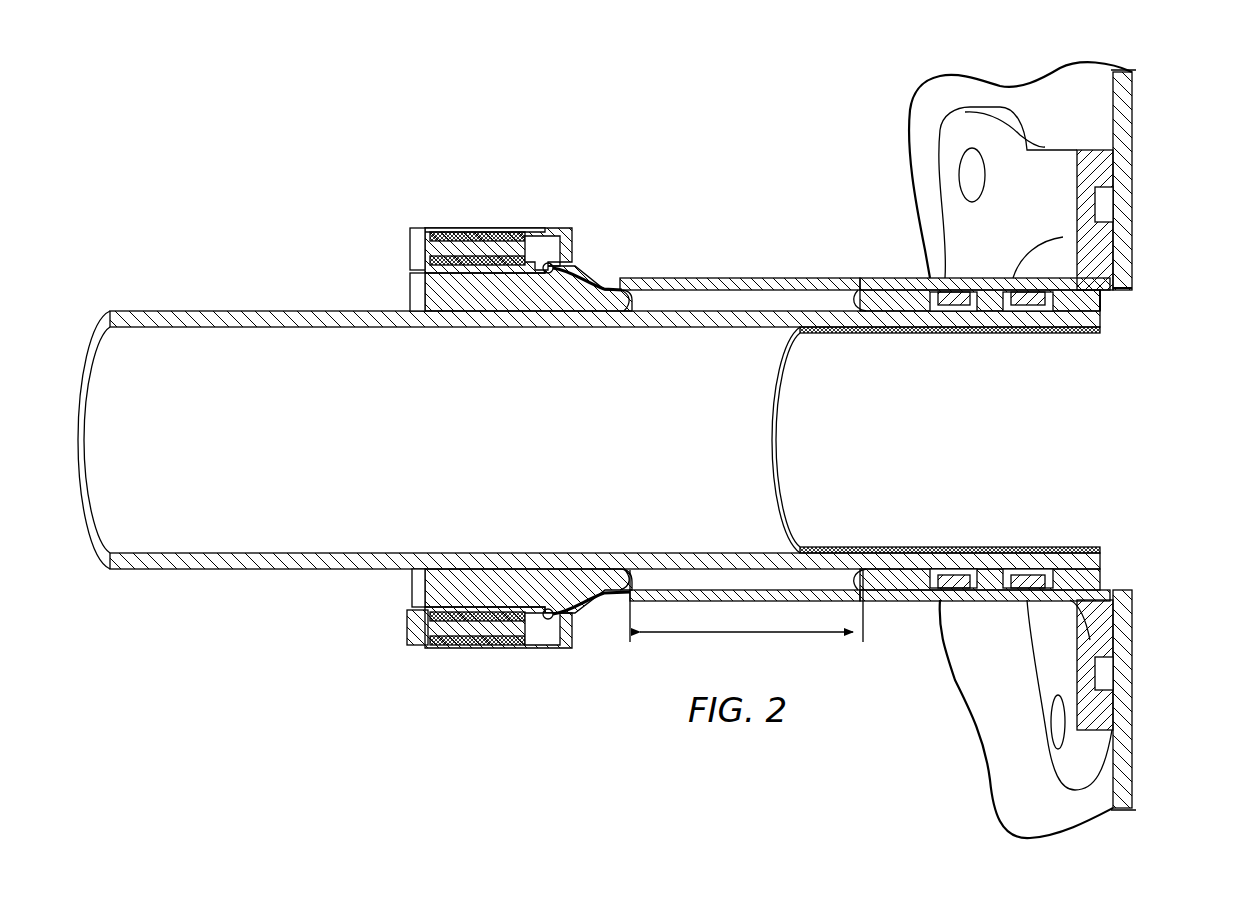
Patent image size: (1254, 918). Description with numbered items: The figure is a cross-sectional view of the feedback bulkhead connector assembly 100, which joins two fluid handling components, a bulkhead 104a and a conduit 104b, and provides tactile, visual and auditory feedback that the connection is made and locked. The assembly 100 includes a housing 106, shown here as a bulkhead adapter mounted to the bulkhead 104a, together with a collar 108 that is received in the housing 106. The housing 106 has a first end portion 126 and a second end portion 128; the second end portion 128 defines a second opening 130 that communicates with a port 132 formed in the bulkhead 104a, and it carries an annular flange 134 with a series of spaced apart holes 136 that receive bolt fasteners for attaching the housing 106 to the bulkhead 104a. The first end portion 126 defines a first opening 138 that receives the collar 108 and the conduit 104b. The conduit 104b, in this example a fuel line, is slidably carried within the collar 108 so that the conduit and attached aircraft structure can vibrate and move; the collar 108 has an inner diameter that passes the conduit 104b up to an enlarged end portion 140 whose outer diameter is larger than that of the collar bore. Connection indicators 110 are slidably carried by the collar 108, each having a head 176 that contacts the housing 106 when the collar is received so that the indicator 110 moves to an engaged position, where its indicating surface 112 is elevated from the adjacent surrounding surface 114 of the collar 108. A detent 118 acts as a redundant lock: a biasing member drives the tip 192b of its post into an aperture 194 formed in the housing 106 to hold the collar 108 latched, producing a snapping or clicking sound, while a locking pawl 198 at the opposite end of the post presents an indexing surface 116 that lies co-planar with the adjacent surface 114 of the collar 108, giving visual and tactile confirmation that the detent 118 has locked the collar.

The feedback bulkhead connector assembly 100 is at (216, 170).
The bulkhead 104a is at (1138, 190).
The conduit 104b is at (155, 310).
The housing 106 is at (727, 278).
The collar 108 is at (418, 585).
The indicator 110 is at (406, 652).
The indicating surface 112 is at (405, 625).
The adjacent surrounding surface 114 is at (415, 293).
The indexing surface 116 is at (415, 245).
The detent 118 is at (494, 206).
The first end portion 126 is at (577, 624).
The second end portion 128 is at (1010, 603).
The second opening 130 is at (1103, 296).
The port 132 is at (1122, 291).
The annular flange 134 is at (1042, 143).
The holes 136 is at (948, 128).
The first opening 138 is at (576, 280).
The enlarged end portion 140 is at (842, 278).
The head 176 is at (512, 632).
The tip 192b is at (557, 232).
The aperture 194 is at (540, 262).
The locking pawl 198 is at (420, 225).